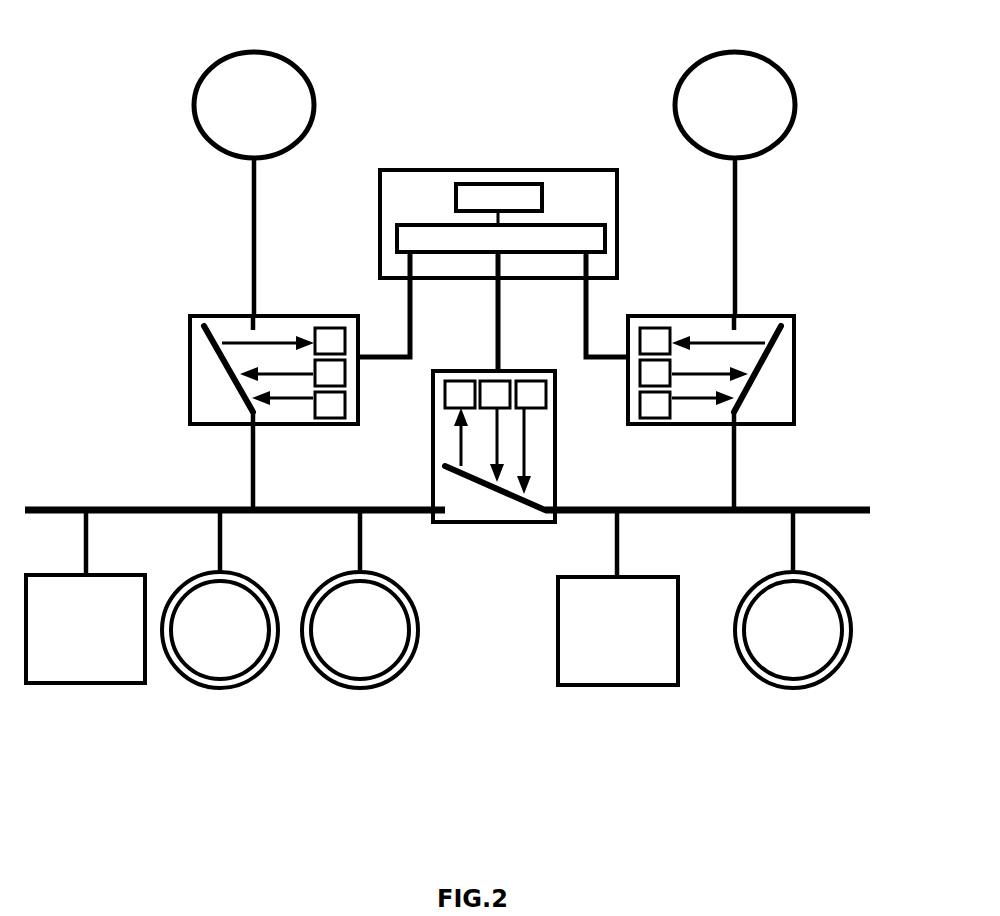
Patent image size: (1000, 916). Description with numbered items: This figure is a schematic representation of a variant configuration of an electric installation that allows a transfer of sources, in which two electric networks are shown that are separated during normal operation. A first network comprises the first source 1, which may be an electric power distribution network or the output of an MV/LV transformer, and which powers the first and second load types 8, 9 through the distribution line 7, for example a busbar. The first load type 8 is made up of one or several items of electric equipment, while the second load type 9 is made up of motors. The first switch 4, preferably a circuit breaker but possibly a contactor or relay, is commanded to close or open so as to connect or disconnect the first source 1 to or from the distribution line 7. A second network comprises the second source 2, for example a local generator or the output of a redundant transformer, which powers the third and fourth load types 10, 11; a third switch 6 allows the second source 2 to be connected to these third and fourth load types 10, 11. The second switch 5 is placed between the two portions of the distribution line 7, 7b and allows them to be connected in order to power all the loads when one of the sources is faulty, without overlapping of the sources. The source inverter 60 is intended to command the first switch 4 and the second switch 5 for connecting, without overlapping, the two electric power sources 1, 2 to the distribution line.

The first source 1 is at (256, 50).
The second source 2 is at (742, 50).
The source inverter 60 is at (430, 182).
The first switch 4 is at (207, 383).
The third switch 6 is at (780, 383).
The second switch 5 is at (483, 512).
The distribution line 7 is at (120, 505).
The distribution line portion 7b is at (818, 506).
The first load type 8 is at (78, 647).
The second load type 9 is at (330, 655).
The third load type 10 is at (614, 648).
The fourth load type 11 is at (780, 655).